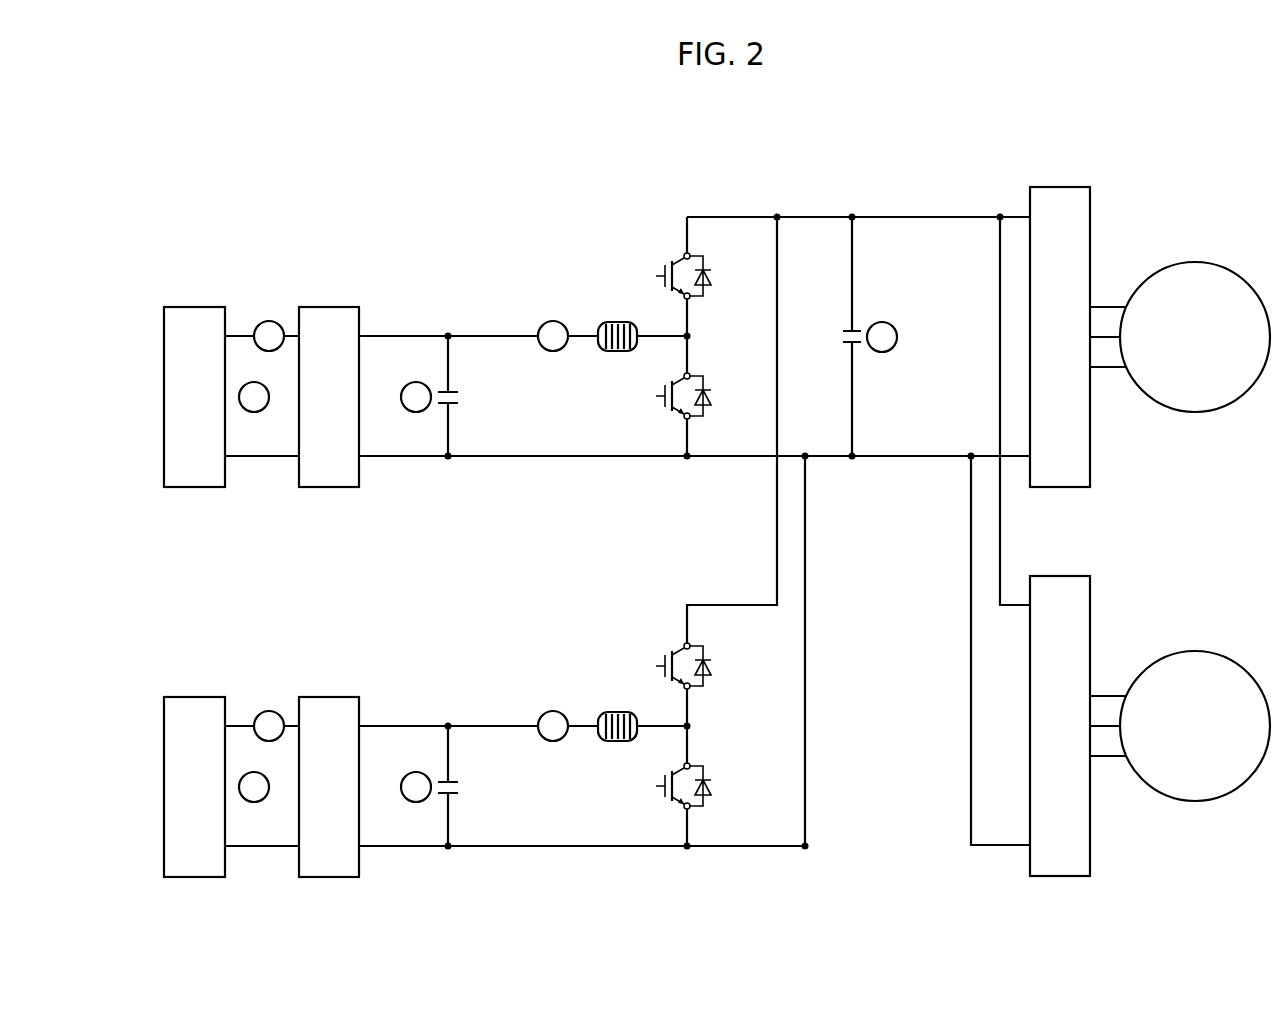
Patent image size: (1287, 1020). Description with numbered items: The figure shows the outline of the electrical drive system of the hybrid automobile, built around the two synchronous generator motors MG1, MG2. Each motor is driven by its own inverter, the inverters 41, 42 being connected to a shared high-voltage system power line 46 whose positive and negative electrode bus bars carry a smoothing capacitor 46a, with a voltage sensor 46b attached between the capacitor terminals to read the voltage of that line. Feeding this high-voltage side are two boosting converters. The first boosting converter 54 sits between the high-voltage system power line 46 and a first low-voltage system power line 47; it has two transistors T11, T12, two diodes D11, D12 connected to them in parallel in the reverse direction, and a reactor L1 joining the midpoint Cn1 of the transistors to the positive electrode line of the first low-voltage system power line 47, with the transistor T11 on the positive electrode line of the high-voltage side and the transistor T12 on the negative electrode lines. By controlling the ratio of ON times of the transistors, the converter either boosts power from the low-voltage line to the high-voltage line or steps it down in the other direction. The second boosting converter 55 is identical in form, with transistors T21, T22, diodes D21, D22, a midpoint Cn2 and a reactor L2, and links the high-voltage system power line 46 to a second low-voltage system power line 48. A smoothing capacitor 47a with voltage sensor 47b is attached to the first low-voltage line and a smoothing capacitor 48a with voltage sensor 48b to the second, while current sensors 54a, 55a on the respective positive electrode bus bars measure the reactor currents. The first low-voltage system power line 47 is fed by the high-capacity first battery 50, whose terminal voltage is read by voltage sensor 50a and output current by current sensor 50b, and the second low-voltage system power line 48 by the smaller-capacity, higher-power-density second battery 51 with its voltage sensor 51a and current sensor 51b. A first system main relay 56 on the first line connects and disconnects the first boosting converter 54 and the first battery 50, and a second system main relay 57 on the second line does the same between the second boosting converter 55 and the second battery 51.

The inverter 41 is at (1058, 187).
The inverter 42 is at (1058, 576).
The high-voltage system power line 46 is at (857, 337).
The smoothing capacitor 46a is at (846, 329).
The voltage sensor 46b is at (886, 306).
The first low-voltage system power line 47 is at (517, 338).
The smoothing capacitor 47a is at (452, 390).
The voltage sensor 47b is at (415, 382).
The second low-voltage system power line 48 is at (517, 728).
The smoothing capacitor 48a is at (452, 780).
The voltage sensor 48b is at (415, 772).
The first battery 50 is at (195, 307).
The voltage sensor 50a is at (255, 413).
The current sensor 50b is at (271, 321).
The second battery 51 is at (195, 697).
The voltage sensor 51a is at (255, 803).
The current sensor 51b is at (271, 711).
The first boosting converter 54 is at (675, 313).
The current sensor 54a is at (553, 321).
The second boosting converter 55 is at (675, 705).
The current sensor 55a is at (553, 711).
The first system main relay 56 is at (328, 307).
The second system main relay 57 is at (328, 697).
The reactor L1 is at (617, 321).
The reactor L2 is at (617, 711).
The transistor T11 is at (658, 278).
The transistor T12 is at (667, 402).
The transistor T21 is at (658, 668).
The transistor T22 is at (667, 792).
The diode D11 is at (716, 270).
The diode D12 is at (716, 398).
The diode D21 is at (716, 660).
The diode D22 is at (716, 788).
The midpoint Cn1 is at (692, 335).
The midpoint Cn2 is at (692, 725).
The motor MG1 is at (1195, 260).
The motor MG2 is at (1196, 650).